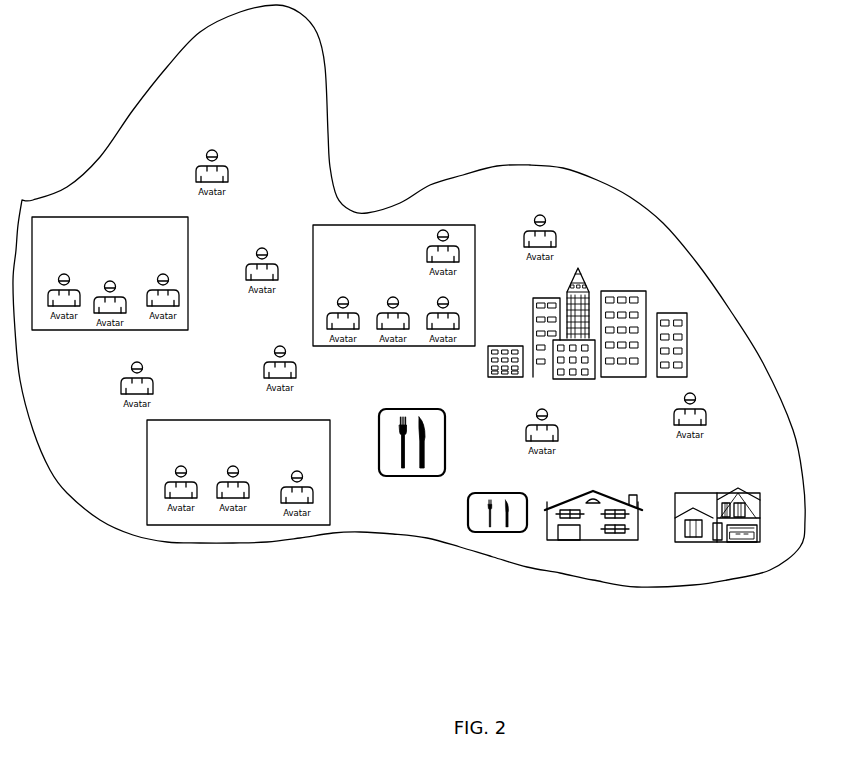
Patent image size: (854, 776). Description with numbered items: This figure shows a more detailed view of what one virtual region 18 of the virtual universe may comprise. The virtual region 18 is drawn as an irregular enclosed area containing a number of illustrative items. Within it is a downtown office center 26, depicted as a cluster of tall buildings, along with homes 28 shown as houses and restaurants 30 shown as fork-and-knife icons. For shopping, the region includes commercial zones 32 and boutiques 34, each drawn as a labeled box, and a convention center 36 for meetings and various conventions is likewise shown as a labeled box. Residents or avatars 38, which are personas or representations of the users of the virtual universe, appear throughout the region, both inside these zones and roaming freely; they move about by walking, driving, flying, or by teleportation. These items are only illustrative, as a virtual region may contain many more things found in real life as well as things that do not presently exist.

The virtual region 18 is at (328, 53).
The downtown office center 26 is at (641, 284).
The homes 28 is at (602, 540).
The restaurants 30 is at (445, 446).
The commercial zones 32 is at (110, 217).
The boutiques 34 is at (147, 472).
The convention center 36 is at (387, 347).
The avatars 38 is at (230, 167).